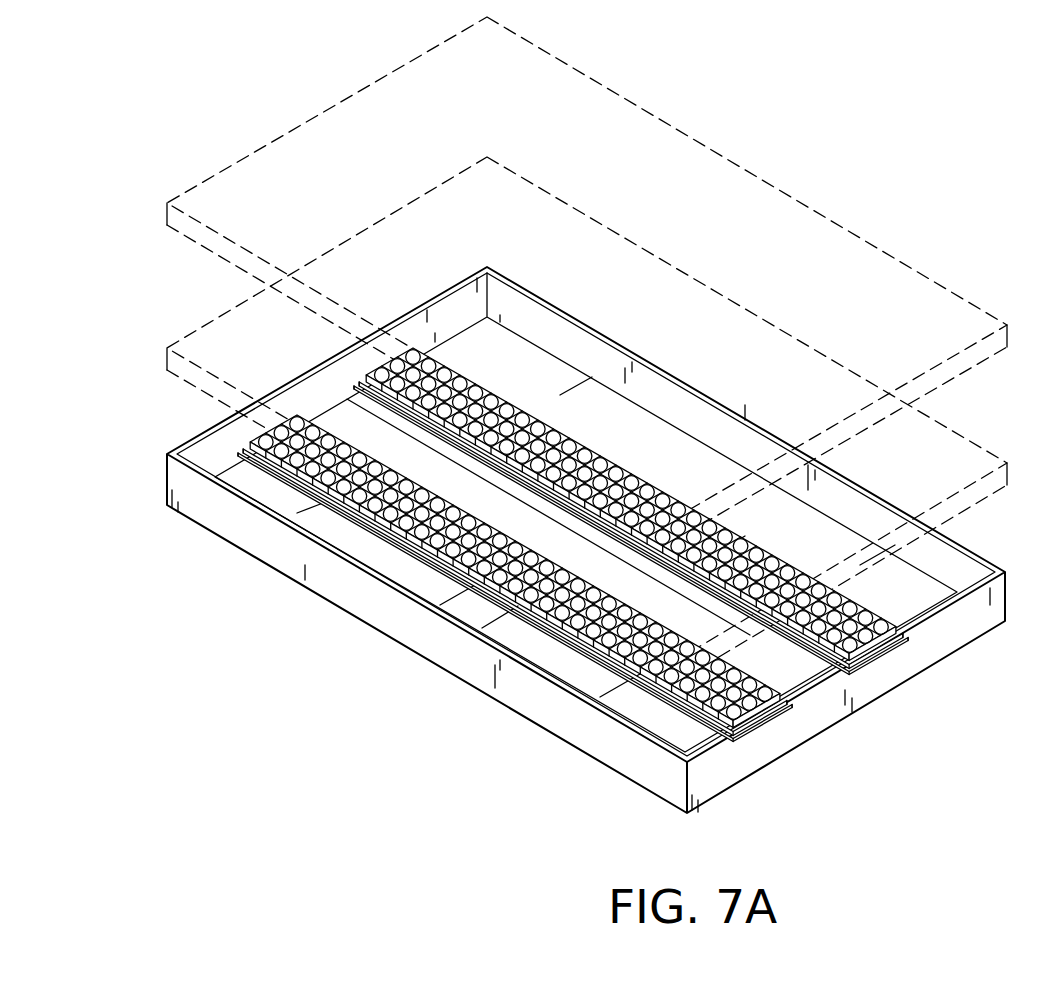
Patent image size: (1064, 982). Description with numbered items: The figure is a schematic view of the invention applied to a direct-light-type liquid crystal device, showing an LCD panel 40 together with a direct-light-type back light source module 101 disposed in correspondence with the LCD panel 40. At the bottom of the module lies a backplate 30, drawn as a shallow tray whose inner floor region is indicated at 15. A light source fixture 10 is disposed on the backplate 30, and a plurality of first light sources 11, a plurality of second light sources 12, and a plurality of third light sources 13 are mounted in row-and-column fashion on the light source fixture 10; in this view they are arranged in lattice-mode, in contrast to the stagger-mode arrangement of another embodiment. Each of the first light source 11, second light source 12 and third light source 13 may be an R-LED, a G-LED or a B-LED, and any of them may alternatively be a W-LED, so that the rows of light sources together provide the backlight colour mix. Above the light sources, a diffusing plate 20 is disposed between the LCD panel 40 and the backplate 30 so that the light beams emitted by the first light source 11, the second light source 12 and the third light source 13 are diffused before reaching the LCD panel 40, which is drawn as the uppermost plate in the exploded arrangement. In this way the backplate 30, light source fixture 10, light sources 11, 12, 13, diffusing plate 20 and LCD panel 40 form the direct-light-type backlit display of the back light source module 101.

The direct-light-type back light source module 101 is at (613, 427).
The light source fixture 10 is at (593, 592).
The first light source 11 is at (880, 647).
The second light source 12 is at (872, 623).
The third light source 13 is at (818, 647).
The bottom surface of receiving container 15 is at (958, 577).
The diffusing plate 20 is at (940, 467).
The backplate 30 is at (613, 552).
The LCD panel 40 is at (930, 312).